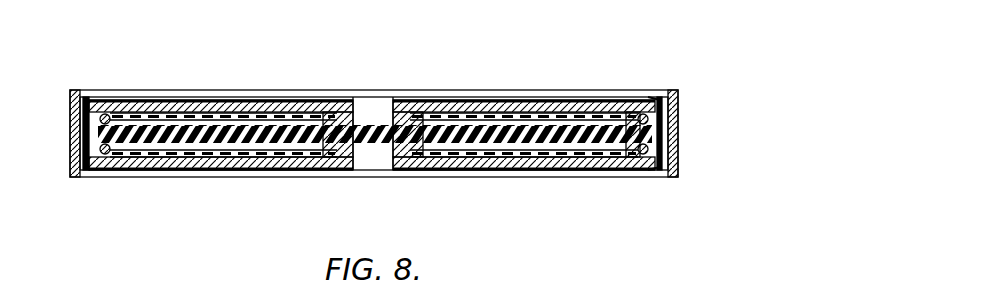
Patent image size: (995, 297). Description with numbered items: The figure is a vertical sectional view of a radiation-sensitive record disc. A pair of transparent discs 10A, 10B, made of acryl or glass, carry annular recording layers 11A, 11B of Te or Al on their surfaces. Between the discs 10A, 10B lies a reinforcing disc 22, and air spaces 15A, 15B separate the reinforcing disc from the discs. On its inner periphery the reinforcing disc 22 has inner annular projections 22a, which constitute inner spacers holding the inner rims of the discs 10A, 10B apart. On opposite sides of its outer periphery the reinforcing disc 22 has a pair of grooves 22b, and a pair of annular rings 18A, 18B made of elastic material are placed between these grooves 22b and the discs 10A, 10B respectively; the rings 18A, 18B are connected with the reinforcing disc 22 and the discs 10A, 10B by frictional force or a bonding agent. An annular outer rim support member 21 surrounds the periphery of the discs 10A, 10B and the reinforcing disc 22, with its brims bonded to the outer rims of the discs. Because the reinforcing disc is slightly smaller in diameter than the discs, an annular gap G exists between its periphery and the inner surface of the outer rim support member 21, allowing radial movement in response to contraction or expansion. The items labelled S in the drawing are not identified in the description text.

The outer rim support member 21 is at (678, 137).
The reinforcing disc 22 is at (205, 137).
The inner annular projections 22a is at (412, 113).
The grooves 22b is at (634, 112).
The recording layer 11A is at (465, 110).
The recording layer 11B is at (577, 166).
The disc 10A is at (511, 113).
The disc 10B is at (517, 159).
The air space 15A is at (557, 104).
The air space 15B is at (469, 147).
The annular ring 18A is at (662, 96).
The annular ring 18B is at (649, 172).
The spacer S is at (96, 100).
The annular gap G is at (84, 138).